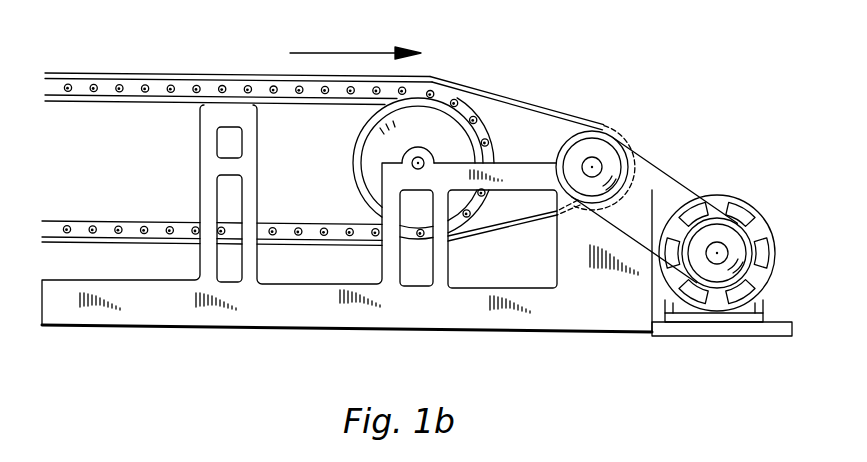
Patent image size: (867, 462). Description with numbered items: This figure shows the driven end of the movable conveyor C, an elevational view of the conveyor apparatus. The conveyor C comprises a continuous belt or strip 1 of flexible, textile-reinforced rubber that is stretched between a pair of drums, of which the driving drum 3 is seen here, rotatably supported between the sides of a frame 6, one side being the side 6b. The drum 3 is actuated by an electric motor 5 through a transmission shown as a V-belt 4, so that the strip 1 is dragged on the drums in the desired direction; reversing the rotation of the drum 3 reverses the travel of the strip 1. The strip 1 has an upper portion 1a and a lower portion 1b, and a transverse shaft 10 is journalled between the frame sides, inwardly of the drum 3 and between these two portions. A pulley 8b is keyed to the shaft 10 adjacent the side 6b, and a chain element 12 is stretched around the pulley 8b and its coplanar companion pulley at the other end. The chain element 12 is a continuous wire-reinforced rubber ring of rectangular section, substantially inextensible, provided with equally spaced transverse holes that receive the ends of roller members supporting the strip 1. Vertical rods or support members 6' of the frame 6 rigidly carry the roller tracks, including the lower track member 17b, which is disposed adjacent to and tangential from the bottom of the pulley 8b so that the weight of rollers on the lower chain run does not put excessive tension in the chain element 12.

The continuous belt or strip 1 is at (565, 113).
The upper portion of the strip 1a is at (170, 80).
The lower portion of the strip 1b is at (488, 235).
The drum 3 is at (592, 152).
The V-belt 4 is at (668, 174).
The electric motor 5 is at (727, 200).
The frame 6 is at (347, 238).
The vertical rods or support members 6' is at (256, 204).
The side of the frame 6b is at (565, 262).
The pulley 8b is at (437, 120).
The shaft 10 is at (410, 162).
The chain element 12 is at (83, 86).
The track member 17b is at (140, 241).
The movable conveyor C is at (150, 102).